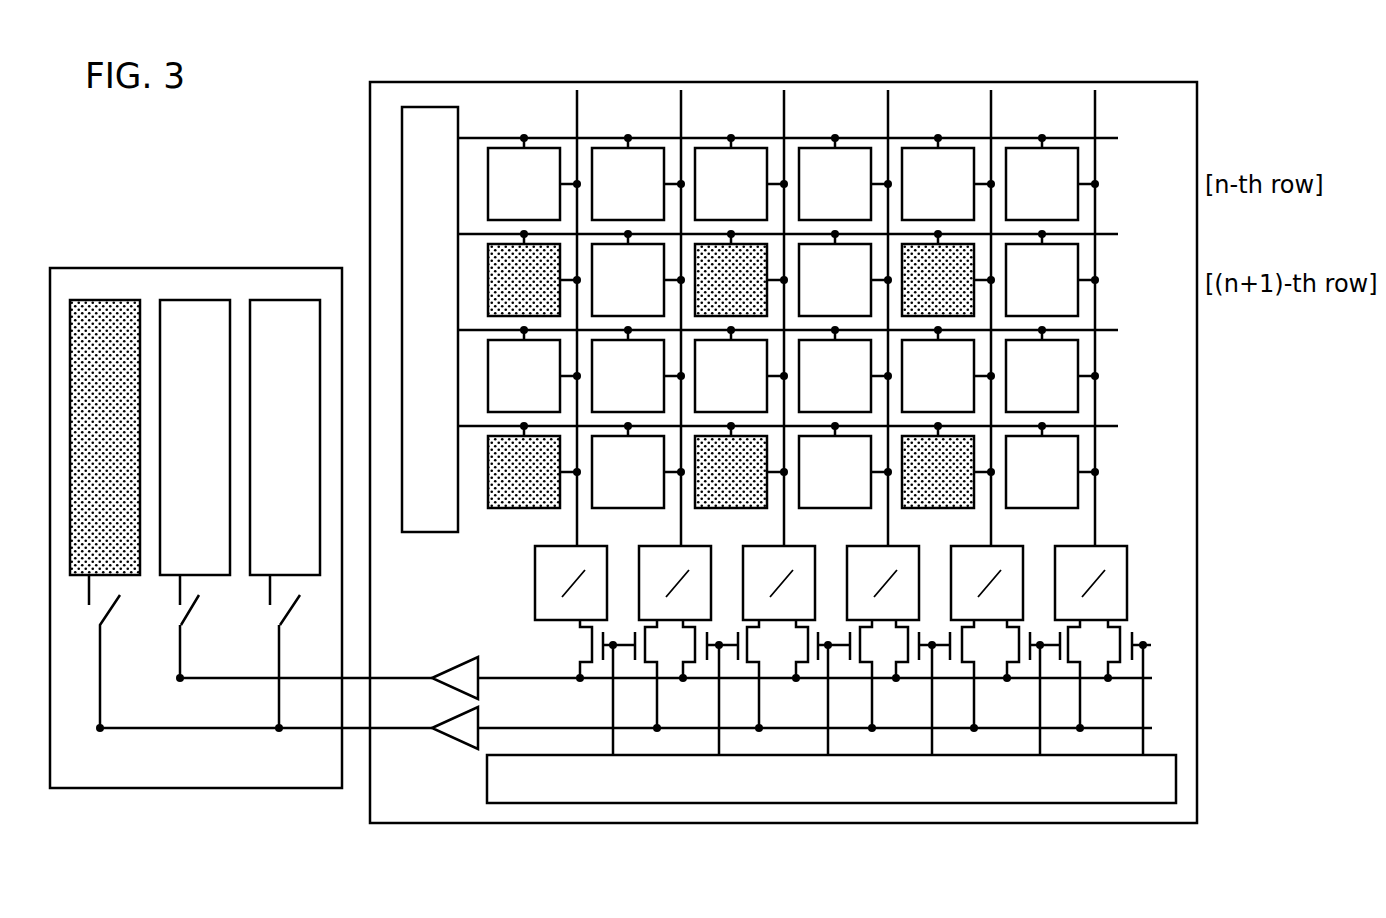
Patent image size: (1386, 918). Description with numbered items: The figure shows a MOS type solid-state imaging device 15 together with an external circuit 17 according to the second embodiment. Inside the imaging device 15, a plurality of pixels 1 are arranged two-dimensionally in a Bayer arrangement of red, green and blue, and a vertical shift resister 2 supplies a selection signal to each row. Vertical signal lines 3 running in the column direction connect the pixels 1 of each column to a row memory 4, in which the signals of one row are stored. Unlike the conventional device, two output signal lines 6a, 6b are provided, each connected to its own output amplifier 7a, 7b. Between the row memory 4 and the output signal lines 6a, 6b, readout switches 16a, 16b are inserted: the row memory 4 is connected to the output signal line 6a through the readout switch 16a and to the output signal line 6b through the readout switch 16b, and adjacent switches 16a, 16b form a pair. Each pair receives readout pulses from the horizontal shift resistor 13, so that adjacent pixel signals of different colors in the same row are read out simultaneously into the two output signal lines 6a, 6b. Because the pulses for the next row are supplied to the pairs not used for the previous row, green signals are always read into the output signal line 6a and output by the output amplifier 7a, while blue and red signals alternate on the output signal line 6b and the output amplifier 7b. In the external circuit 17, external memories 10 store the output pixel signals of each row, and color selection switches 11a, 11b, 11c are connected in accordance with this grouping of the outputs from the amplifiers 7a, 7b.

The pixel 1 is at (1080, 402).
The vertical shift resister 2 is at (434, 118).
The vertical signal line 3 is at (574, 117).
The row memory 4 is at (639, 562).
The output signal line 6a is at (513, 673).
The output signal line 6b is at (560, 725).
The output amplifier 7a is at (460, 662).
The output amplifier 7b is at (452, 742).
The external memory 10 is at (290, 298).
The color selection switch 11a is at (197, 605).
The color selection switch 11b is at (297, 603).
The color selection switch 11c is at (120, 602).
The horizontal shift resistor 13 is at (1165, 768).
The MOS type solid-state imaging device 15 is at (1197, 680).
The readout switch 16a is at (591, 645).
The readout switch 16b is at (648, 643).
The external circuit 17 is at (318, 267).